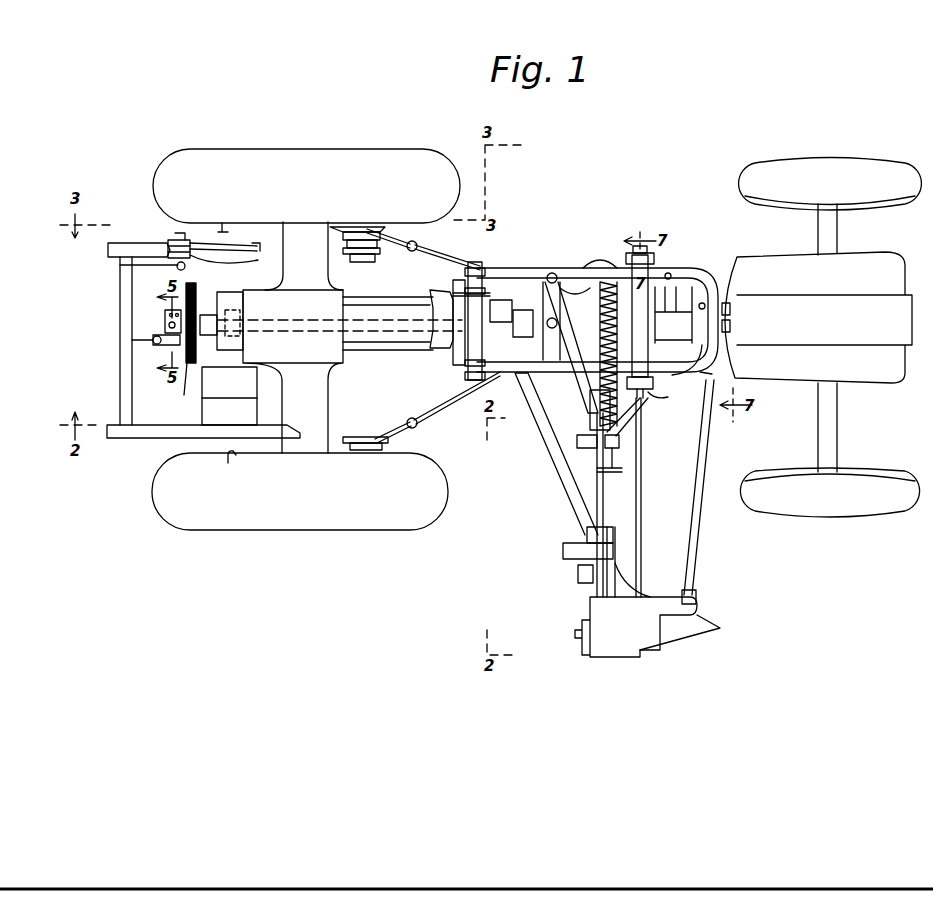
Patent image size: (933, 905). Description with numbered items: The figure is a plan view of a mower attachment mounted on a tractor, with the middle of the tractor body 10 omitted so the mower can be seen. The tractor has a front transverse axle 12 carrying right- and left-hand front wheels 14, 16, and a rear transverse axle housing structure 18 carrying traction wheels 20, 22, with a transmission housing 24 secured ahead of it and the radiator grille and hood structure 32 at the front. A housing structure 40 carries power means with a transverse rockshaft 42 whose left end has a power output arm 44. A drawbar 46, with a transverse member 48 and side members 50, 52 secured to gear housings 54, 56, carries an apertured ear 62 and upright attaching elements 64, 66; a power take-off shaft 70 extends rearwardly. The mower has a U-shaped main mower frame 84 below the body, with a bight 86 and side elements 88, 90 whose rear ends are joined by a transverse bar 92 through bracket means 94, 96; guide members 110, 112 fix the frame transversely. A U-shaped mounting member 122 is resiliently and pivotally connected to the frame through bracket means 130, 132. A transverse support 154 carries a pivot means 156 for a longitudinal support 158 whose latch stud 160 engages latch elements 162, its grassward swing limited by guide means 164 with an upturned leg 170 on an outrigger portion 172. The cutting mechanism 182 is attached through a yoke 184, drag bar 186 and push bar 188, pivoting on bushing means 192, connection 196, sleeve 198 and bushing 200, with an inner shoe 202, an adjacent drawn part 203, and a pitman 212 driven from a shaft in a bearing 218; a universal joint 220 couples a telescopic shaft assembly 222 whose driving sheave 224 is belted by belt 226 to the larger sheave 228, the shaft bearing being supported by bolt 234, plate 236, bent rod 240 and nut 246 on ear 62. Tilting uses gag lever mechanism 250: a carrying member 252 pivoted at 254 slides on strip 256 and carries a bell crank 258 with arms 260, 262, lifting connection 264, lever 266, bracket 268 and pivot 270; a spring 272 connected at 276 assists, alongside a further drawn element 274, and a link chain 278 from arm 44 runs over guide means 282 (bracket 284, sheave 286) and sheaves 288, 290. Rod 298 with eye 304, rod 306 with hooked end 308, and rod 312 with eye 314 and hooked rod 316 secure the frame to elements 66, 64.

The tractor body 10 is at (373, 352).
The transverse axle 12 is at (837, 425).
The right-hand front wheel 14 is at (905, 517).
The left-hand front wheel 16 is at (877, 170).
The transverse axle housing structure 18 is at (328, 386).
The right-hand traction wheel 20 is at (300, 530).
The left-hand traction wheel 22 is at (315, 158).
The transmission housing 24 is at (385, 345).
The radiator grille and hood structure 32 is at (810, 258).
The housing structure 40 is at (280, 278).
The transverse rockshaft 42 is at (255, 243).
The power output arm 44 is at (225, 262).
The drawbar 46 is at (110, 291).
The transverse member 48 is at (120, 377).
The right-hand side member 50 is at (145, 438).
The left-hand side member 52 is at (125, 243).
The right-hand gear housing 54 is at (230, 463).
The left-hand gear housing 56 is at (222, 222).
The apertured ear 62 is at (140, 348).
The upright attaching element 64 is at (350, 450).
The upright attaching element 66 is at (345, 230).
The power take-off shaft 70 is at (222, 310).
The main mower frame 84 is at (695, 262).
The transverse member or bight 86 is at (720, 294).
The right-hand side element 88 is at (678, 378).
The left-hand side element 90 is at (505, 268).
The transverse bar 92 is at (440, 319).
The bracket means 94 is at (460, 385).
The bracket means 96 is at (455, 271).
The right-hand guide member 110 is at (465, 365).
The left-hand guide member 112 is at (465, 290).
The U-shaped mounting member 122 is at (650, 255).
The supporting bracket means 130 is at (630, 410).
The supporting bracket means 132 is at (660, 256).
The transverse support 154 is at (530, 298).
The pivot means 156 is at (546, 322).
The longitudinal support 158 is at (700, 332).
The latch stud 160 is at (730, 309).
The releasable latch elements 162 is at (730, 326).
The limit or guide means 164 is at (713, 268).
The upturned leg 170 is at (620, 440).
The outrigger portion 172 is at (668, 395).
The mower cutting mechanism 182 is at (675, 652).
The yoke 184 is at (697, 612).
The drag bar 186 is at (690, 577).
The push bar 188 is at (583, 505).
The bushing means 192 is at (720, 355).
The drag bar connection 196 is at (700, 596).
The sleeve connection 198 is at (587, 535).
The bearing or bushing 200 is at (515, 380).
The inner ground-engaging shoe 202 is at (720, 628).
The housing 203 is at (625, 660).
The pitman 212 is at (643, 548).
The longitudinal bearing 218 is at (568, 370).
The universal joint connection 220 is at (495, 300).
The telescopic shaft assembly 222 is at (450, 350).
The driving sheave 224 is at (200, 338).
The driving belt 226 is at (187, 392).
The larger sheave 228 is at (188, 375).
The vertical bolt 234 is at (168, 326).
The horizontal plate 236 is at (165, 318).
The bent rod 240 is at (160, 348).
The upper adjusting and lock nut 246 is at (132, 340).
The gag lever mechanism 250 is at (568, 574).
The carrying member 252 is at (585, 400).
The pivot 254 is at (552, 272).
The longitudinal strip 256 is at (572, 385).
The bell crank 258 is at (600, 460).
The first arm 260 is at (597, 482).
The second arm 262 is at (568, 444).
The lifting connection 264 is at (609, 528).
The lever 266 is at (622, 545).
The longitudinal bracket 268 is at (620, 460).
The pivot 270 is at (615, 448).
The counterbalancing and assist spring 272 is at (658, 318).
The spring 274 is at (612, 280).
The spring connection 276 is at (620, 470).
The link chain 278 is at (573, 260).
The guide means 282 is at (588, 258).
The mounting bracket 284 is at (600, 266).
The sheave 286 is at (578, 299).
The sheave 288 is at (385, 262).
The sheave 290 is at (164, 240).
The rod 298 is at (447, 248).
The eye 304 is at (416, 243).
The second rod 306 is at (395, 234).
The hooked rear end 308 is at (365, 227).
The rod 312 is at (445, 402).
The eye 314 is at (418, 428).
The hooked rod 316 is at (400, 448).